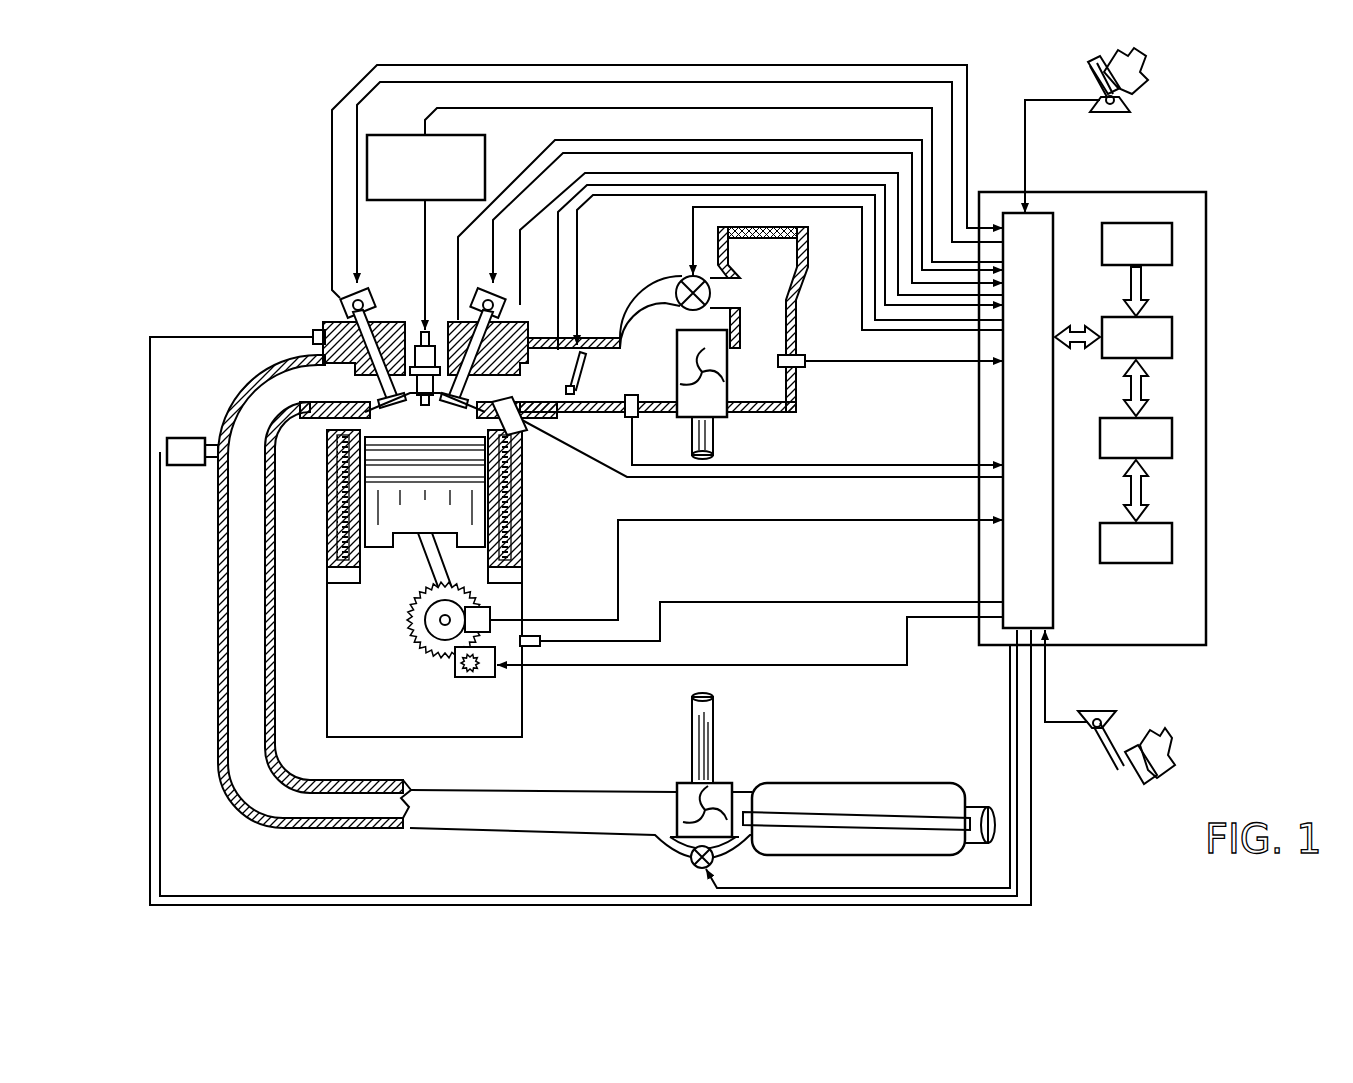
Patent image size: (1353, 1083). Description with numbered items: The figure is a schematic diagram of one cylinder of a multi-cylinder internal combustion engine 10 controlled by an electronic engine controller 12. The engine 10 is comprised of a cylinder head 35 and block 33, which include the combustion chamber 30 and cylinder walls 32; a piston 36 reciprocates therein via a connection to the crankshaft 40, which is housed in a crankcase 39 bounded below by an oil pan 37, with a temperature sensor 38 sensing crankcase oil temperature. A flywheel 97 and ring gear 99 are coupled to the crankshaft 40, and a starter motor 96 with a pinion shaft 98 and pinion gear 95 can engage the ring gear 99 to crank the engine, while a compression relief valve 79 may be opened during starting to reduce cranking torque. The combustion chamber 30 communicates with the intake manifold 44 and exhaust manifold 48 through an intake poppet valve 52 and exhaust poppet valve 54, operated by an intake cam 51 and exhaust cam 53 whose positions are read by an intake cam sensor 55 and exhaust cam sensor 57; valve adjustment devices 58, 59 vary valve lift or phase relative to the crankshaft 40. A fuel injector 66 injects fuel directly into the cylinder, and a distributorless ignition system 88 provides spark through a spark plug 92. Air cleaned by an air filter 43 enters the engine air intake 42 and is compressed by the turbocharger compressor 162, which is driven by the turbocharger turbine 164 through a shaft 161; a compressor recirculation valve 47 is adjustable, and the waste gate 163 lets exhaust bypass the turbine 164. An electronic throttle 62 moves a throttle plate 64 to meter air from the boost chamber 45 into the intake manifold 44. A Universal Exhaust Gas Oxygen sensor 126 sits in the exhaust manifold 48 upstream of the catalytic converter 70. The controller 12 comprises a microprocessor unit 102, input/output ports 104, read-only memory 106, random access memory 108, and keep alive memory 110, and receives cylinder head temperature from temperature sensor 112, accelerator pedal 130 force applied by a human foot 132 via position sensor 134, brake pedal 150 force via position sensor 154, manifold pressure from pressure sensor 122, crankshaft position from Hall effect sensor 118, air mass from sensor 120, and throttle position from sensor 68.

The internal combustion engine 10 is at (262, 273).
The electronic engine controller 12 is at (1195, 195).
The combustion chamber 30 is at (423, 420).
The cylinder walls 32 is at (368, 558).
The block 33 is at (325, 462).
The cylinder head 35 is at (322, 318).
The piston 36 is at (407, 522).
The oil pan 37 is at (522, 714).
The temperature sensor 38 is at (540, 643).
The crankcase 39 is at (343, 660).
The crankshaft 40 is at (425, 656).
The engine air intake 42 is at (636, 246).
The air filter 43 is at (776, 238).
The intake manifold 44 is at (553, 393).
The boost chamber 45 is at (651, 390).
The compressor recirculation valve 47 is at (684, 284).
The exhaust manifold 48 is at (305, 393).
The intake cam 51 is at (498, 280).
The intake poppet valve 52 is at (465, 381).
The exhaust cam 53 is at (368, 292).
The exhaust poppet valve 54 is at (385, 399).
The intake cam sensor 55 is at (500, 306).
The exhaust cam sensor 57 is at (352, 292).
The valve adjustment device 58 is at (362, 301).
The valve adjustment device 59 is at (488, 303).
The electronic throttle 62 is at (582, 357).
The throttle plate 64 is at (575, 389).
The fuel injector 66 is at (540, 433).
The throttle position sensor 68 is at (562, 351).
The catalytic converter 70 is at (792, 783).
The compression relief valve 79 is at (455, 352).
The distributorless ignition system 88 is at (380, 135).
The spark plug 92 is at (420, 346).
The pinion gear 95 is at (467, 680).
The starter motor 96 is at (492, 678).
The flywheel 97 is at (410, 634).
The pinion shaft 98 is at (460, 672).
The ring gear 99 is at (440, 665).
The microprocessor unit 102 is at (1175, 338).
The input/output ports 104 is at (1055, 224).
The read-only memory 106 is at (1175, 242).
The random access memory 108 is at (1175, 438).
The keep alive memory 110 is at (1175, 542).
The temperature sensor 112 is at (313, 334).
The Hall effect sensor 118 is at (490, 612).
The air mass sensor 120 is at (800, 360).
The pressure sensor 122 is at (625, 413).
The Universal Exhaust Gas Oxygen sensor 126 is at (185, 438).
The accelerator pedal 130 is at (1092, 80).
The human foot 132 is at (1140, 63).
The position sensor 134 is at (1130, 104).
The brake pedal 150 is at (1118, 770).
The position sensor 154 is at (1082, 713).
The shaft 161 is at (713, 752).
The turbocharger compressor 162 is at (715, 404).
The waste gate 163 is at (692, 866).
The turbocharger turbine 164 is at (680, 783).